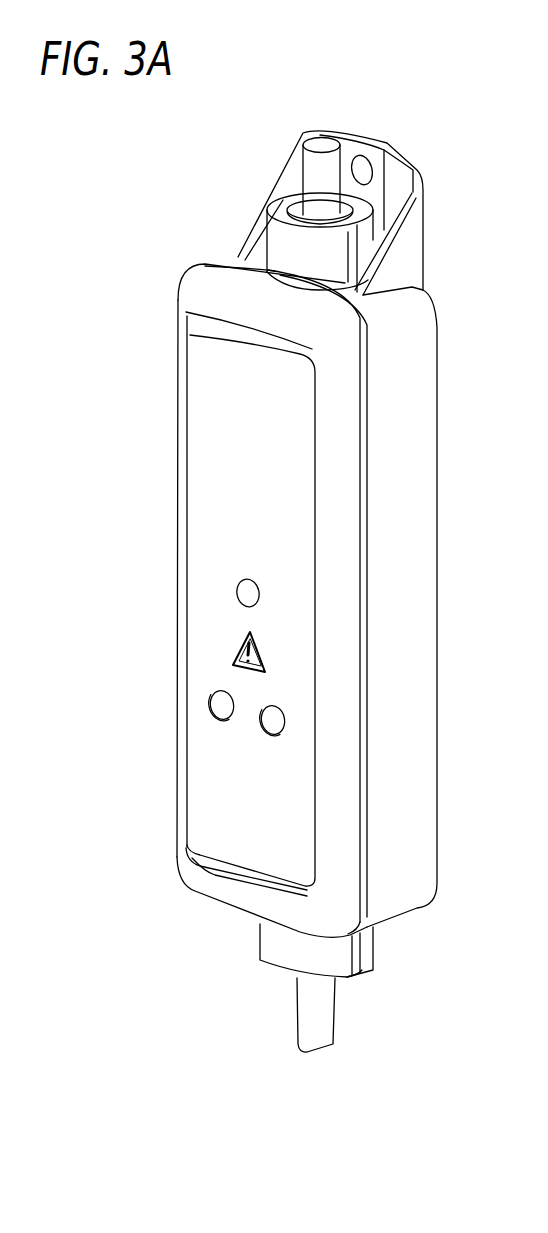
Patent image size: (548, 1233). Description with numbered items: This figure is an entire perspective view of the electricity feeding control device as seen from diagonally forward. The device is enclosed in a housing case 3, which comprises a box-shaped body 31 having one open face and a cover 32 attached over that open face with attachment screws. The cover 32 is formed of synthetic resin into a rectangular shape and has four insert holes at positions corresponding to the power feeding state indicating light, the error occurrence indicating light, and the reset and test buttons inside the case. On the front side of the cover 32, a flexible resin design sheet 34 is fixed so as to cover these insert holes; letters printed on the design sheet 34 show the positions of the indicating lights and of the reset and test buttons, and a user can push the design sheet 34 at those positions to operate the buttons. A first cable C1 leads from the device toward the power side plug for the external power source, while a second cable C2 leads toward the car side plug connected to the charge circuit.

The housing case 3 is at (304, 591).
The body 31 is at (428, 755).
The cover 32 is at (203, 870).
The design sheet 34 is at (215, 502).
The first cable C1 is at (310, 1010).
The second cable C2 is at (318, 175).